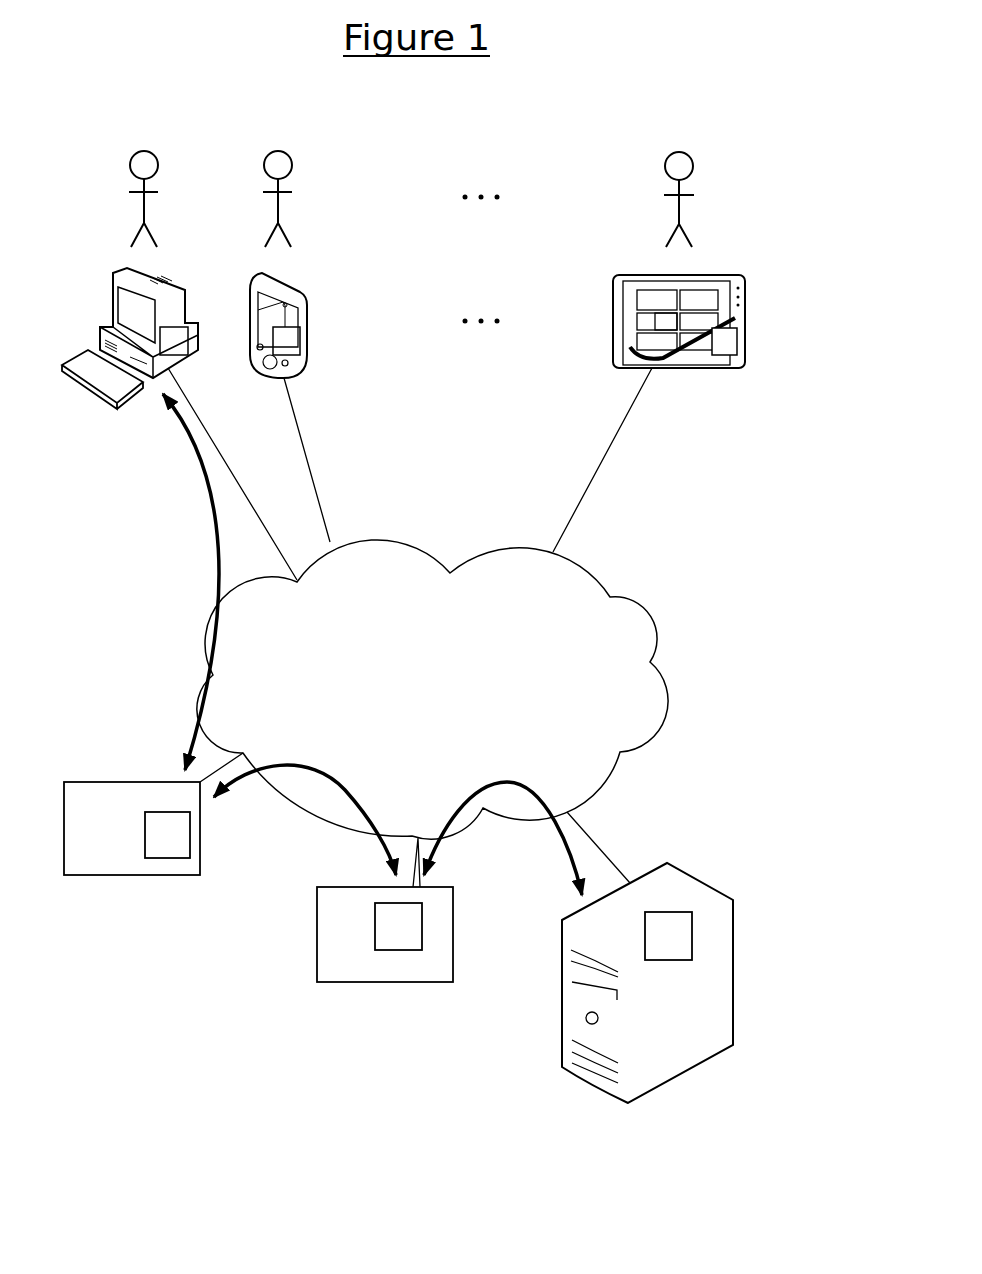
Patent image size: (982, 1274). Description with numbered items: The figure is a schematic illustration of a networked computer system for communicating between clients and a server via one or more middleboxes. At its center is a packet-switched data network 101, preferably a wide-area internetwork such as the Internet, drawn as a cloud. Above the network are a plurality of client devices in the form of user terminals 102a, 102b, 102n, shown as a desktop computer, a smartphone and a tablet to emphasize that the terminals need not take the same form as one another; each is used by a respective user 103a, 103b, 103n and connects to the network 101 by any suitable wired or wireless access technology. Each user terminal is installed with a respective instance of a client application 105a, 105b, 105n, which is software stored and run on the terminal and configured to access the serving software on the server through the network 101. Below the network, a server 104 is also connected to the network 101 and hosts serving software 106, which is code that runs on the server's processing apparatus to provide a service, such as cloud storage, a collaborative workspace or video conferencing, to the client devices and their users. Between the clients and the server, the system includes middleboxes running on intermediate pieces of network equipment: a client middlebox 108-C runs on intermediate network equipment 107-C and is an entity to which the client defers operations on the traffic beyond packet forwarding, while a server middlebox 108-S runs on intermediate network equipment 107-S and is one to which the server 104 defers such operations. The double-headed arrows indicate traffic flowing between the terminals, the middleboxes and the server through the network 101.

The packet-switched data network 101 is at (425, 548).
The user terminal 102a is at (151, 313).
The user terminal 102b is at (312, 301).
The user terminal 102n is at (713, 288).
The user 103a is at (153, 152).
The user 103b is at (288, 152).
The user 103n is at (690, 153).
The server 104 is at (695, 983).
The client application 105a is at (180, 342).
The client application 105b is at (293, 343).
The client application 105n is at (732, 343).
The serving software 106 is at (692, 942).
The intermediate network equipment 107-C is at (176, 876).
The intermediate network equipment 107-S is at (419, 981).
The client middlebox 108-C is at (190, 838).
The server middlebox 108-S is at (422, 917).